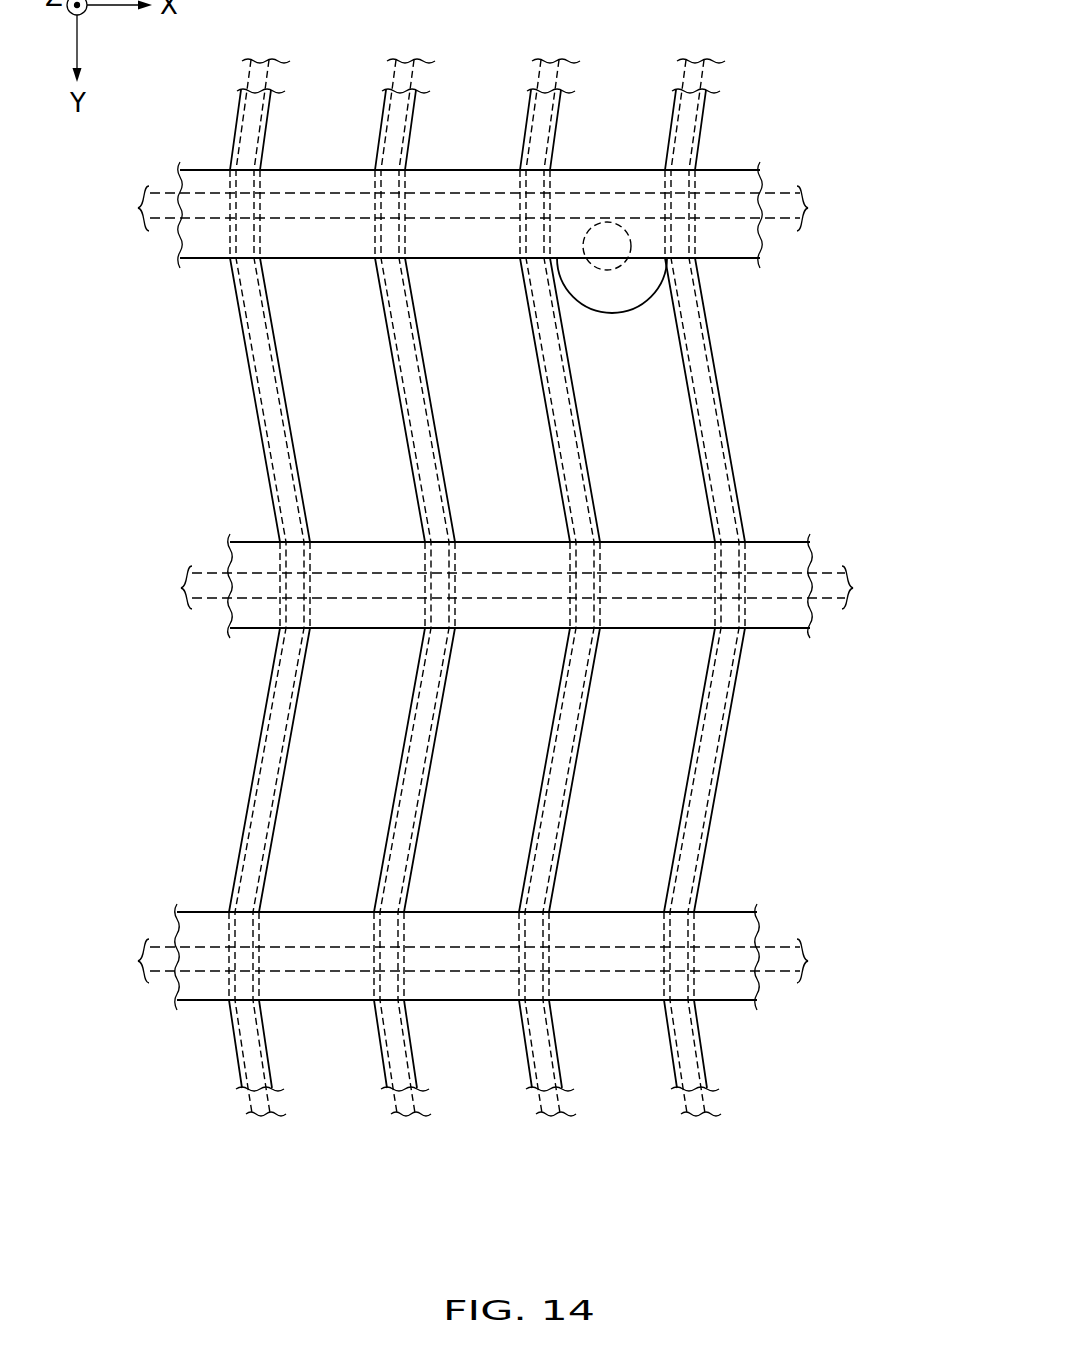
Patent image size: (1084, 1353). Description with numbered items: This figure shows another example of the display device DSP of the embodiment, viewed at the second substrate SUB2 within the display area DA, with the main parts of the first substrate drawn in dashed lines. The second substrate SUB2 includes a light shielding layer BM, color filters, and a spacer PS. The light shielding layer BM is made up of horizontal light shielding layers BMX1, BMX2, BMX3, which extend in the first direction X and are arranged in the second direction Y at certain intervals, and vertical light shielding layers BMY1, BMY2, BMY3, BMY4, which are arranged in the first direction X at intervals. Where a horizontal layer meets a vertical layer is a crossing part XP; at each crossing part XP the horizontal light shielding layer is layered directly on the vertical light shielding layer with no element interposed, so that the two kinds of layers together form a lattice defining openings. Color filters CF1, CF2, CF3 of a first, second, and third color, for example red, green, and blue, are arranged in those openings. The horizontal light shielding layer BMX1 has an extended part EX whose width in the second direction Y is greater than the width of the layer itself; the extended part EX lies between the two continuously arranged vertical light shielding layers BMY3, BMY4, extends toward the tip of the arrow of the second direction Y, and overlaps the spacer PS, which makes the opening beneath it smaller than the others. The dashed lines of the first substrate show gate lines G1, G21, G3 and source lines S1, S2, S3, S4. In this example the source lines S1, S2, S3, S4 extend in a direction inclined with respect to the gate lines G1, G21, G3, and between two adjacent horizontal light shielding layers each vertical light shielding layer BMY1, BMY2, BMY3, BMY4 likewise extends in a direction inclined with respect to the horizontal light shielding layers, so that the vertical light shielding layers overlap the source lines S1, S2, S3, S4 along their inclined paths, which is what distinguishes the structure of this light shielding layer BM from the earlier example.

The horizontal light shielding layer BMX1 is at (748, 186).
The horizontal light shielding layer BMX2 is at (797, 560).
The horizontal light shielding layer BMX3 is at (747, 932).
The vertical light shielding layer BMY1 is at (258, 1073).
The vertical light shielding layer BMY2 is at (409, 646).
The vertical light shielding layer BMY3 is at (554, 646).
The vertical light shielding layer BMY4 is at (699, 646).
The light shielding layer BM is at (200, 282).
The gate line G1 is at (140, 210).
The gate line G21 is at (180, 588).
The gate line G3 is at (140, 962).
The source line S1 is at (272, 1098).
The source line S2 is at (436, 615).
The source line S3 is at (581, 615).
The source line S4 is at (726, 615).
The crossing part XP is at (247, 208).
The spacer PS is at (608, 222).
The extended part EX is at (610, 308).
The color filter of a first color CF1 is at (347, 591).
The color filter of a second color CF2 is at (492, 591).
The color filter of a third color CF3 is at (636, 591).
The display area DA is at (746, 380).
The second substrate SUB2 is at (810, 99).
The display device DSP is at (726, 34).